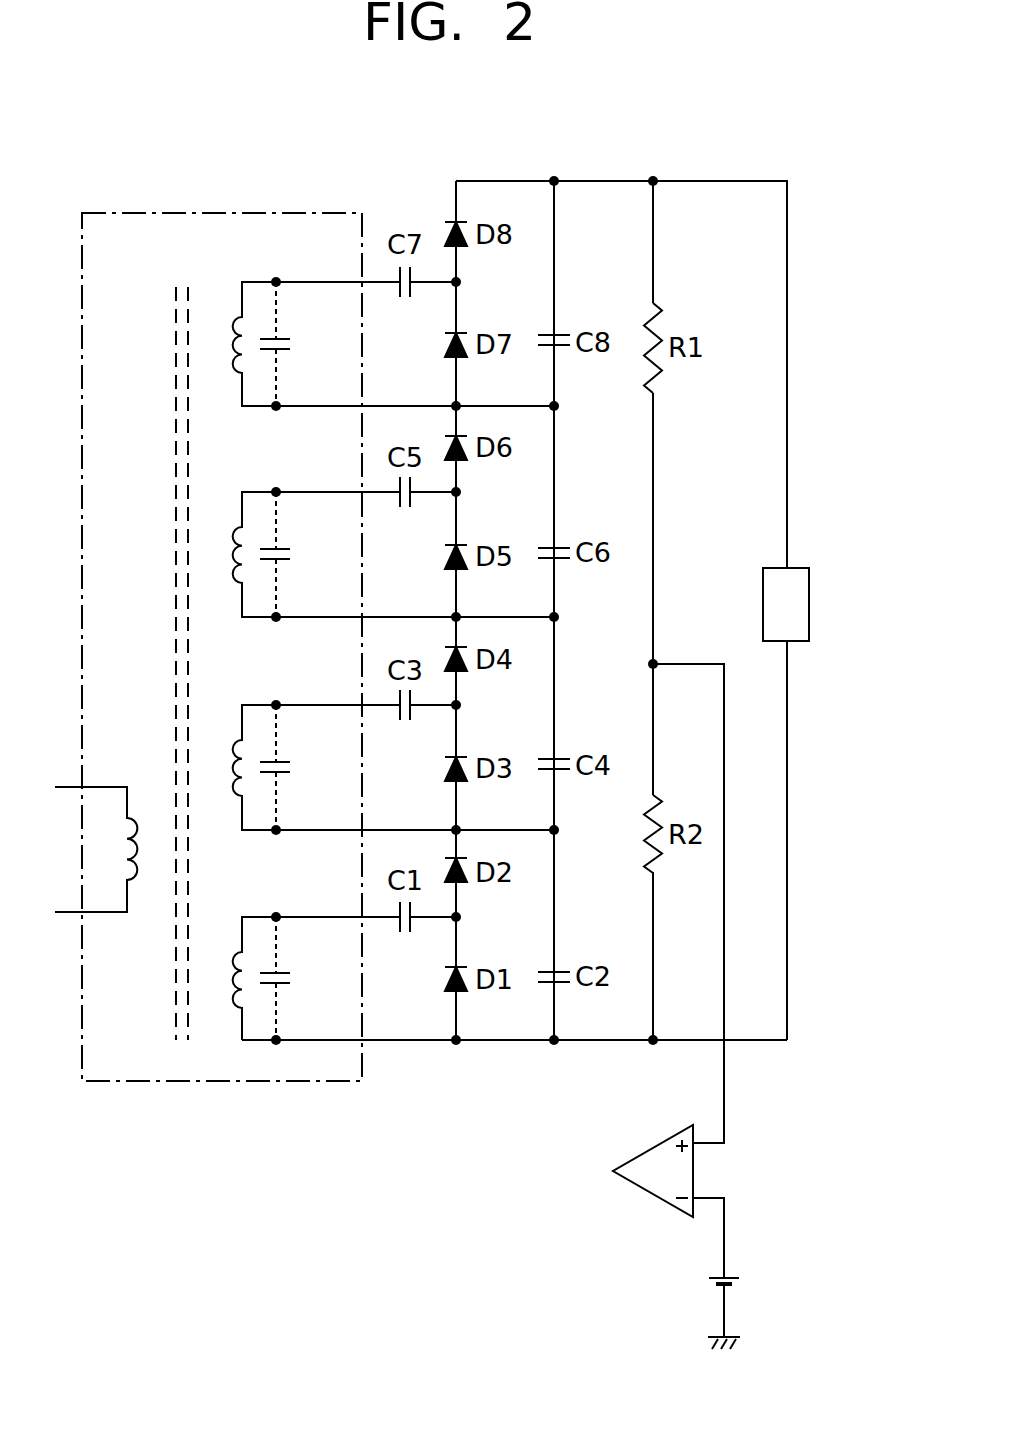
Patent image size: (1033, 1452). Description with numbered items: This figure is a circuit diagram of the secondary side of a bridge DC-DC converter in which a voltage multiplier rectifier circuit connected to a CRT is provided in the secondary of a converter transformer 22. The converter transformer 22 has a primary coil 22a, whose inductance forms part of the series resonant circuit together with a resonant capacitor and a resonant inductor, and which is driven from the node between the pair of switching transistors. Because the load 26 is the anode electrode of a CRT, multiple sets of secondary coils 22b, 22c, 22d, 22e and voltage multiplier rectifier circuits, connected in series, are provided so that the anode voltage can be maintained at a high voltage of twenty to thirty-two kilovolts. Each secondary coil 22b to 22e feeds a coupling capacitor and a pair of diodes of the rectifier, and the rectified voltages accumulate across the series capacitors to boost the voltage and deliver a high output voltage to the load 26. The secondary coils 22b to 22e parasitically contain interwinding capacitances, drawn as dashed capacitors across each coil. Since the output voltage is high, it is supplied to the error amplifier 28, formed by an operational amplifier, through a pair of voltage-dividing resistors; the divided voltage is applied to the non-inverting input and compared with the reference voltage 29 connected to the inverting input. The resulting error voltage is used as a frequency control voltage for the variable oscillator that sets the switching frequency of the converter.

The converter transformer 22 is at (185, 211).
The primary coil 22a is at (146, 836).
The secondary coil 22b is at (236, 967).
The secondary coil 22c is at (236, 753).
The secondary coil 22d is at (236, 543).
The secondary coil 22e is at (236, 333).
The load 26 is at (809, 602).
The error amplifier 28 is at (644, 1149).
The reference voltage 29 is at (741, 1283).